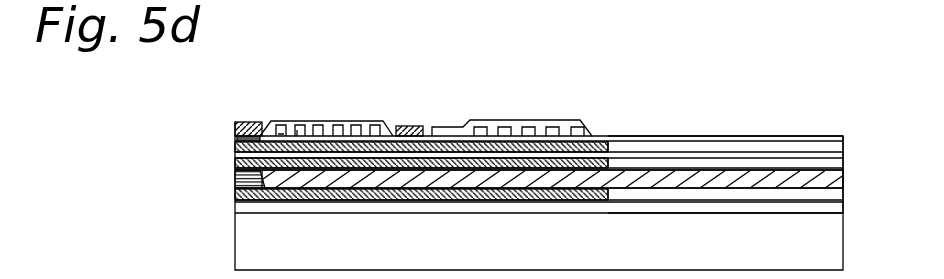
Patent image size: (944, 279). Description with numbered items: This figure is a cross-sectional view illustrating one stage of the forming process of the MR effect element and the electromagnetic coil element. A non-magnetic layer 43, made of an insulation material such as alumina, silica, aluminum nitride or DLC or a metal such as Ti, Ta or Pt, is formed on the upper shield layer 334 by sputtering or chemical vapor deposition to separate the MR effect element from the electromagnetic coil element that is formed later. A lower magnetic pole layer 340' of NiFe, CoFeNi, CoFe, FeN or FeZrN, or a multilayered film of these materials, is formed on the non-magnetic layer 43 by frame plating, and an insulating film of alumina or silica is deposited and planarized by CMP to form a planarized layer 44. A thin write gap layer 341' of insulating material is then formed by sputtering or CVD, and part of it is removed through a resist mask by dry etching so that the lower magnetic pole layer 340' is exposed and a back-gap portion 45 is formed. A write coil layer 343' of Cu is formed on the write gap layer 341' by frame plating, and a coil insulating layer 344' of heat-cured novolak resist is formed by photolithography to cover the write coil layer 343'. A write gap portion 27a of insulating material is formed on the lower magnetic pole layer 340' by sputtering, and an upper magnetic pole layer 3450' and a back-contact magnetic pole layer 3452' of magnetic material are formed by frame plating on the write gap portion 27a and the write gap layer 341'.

The upper magnetic pole layer 3450' is at (200, 102).
The write gap portion 27a is at (236, 138).
The lower magnetic pole layer 340' is at (374, 144).
The non-magnetic layer 43 is at (236, 156).
The upper shield layer 334 is at (236, 168).
The write coil layer 343' is at (270, 92).
The write gap layer 341' is at (328, 102).
The coil insulating layer 344' is at (339, 102).
The back-contact magnetic pole layer 3452' is at (450, 92).
The back-gap portion 45 is at (421, 136).
The planarized layer 44 is at (828, 148).